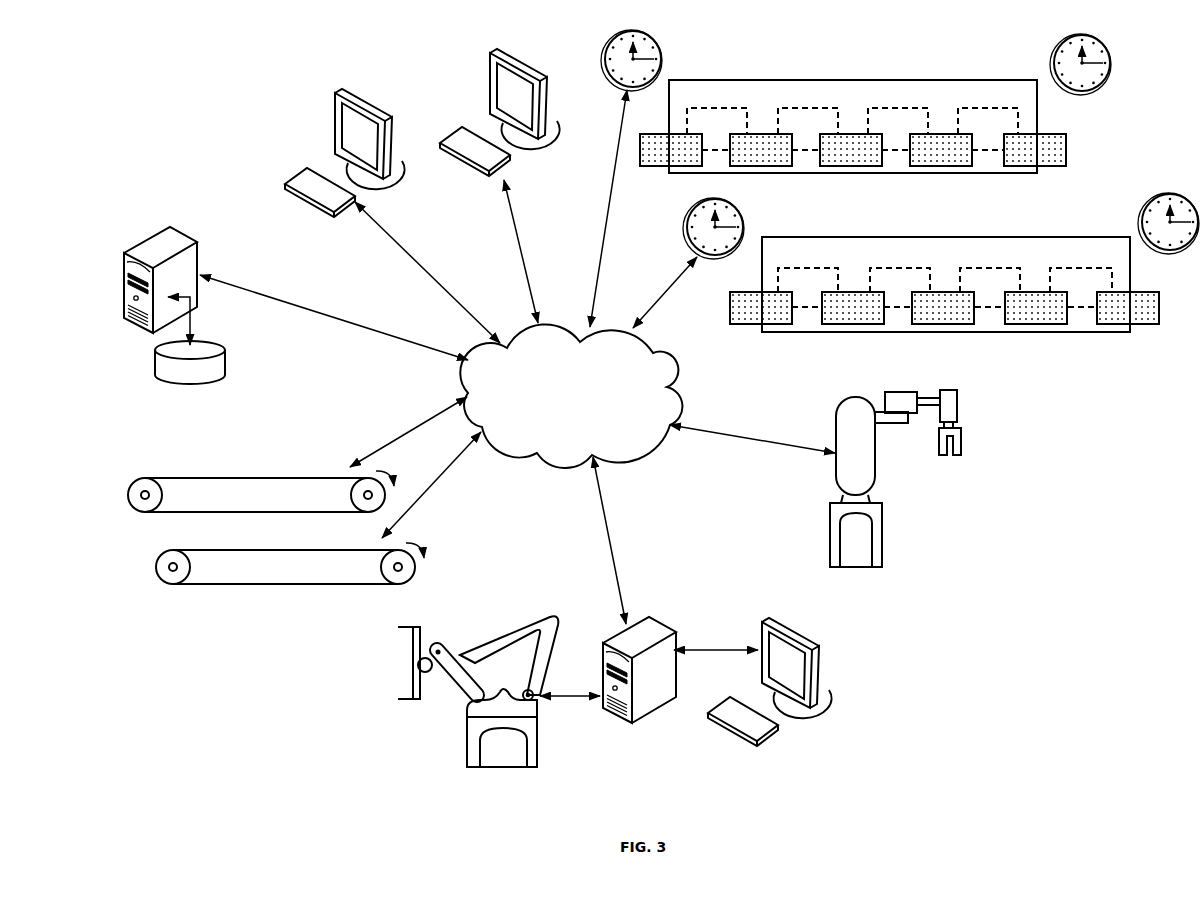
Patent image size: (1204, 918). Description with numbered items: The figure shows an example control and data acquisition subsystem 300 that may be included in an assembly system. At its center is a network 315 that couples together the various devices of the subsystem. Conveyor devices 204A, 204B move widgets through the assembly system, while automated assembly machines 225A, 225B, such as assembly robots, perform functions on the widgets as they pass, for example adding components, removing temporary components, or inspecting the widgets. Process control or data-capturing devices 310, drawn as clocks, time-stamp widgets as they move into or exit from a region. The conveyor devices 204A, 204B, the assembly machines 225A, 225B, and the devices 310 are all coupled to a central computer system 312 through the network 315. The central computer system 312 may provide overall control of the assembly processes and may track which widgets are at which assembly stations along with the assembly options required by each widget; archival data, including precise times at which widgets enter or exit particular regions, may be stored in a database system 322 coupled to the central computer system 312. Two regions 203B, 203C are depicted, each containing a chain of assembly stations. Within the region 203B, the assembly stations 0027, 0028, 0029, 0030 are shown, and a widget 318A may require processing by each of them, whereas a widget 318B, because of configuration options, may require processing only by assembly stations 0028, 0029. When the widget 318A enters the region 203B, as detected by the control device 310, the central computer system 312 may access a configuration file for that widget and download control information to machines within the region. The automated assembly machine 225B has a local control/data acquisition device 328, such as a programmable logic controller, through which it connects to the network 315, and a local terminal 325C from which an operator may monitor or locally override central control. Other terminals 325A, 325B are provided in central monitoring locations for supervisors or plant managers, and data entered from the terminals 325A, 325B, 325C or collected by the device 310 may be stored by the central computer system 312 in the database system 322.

The control and data acquisition subsystem 300 is at (1017, 695).
The process control/data acquisition device 310 is at (661, 47).
The central computer system 312 is at (156, 240).
The network 315 is at (583, 406).
The database system 322 is at (190, 385).
The terminal 325A is at (340, 92).
The terminal 325B is at (496, 51).
The local terminal 325C is at (820, 658).
The local control/data acquisition device 328 is at (632, 715).
The region 203B is at (873, 129).
The region 203C is at (1130, 283).
The widget 318A is at (641, 167).
The widget 318B is at (762, 166).
The assembly station 0027 is at (716, 108).
The assembly station 0028 is at (806, 108).
The assembly station 0029 is at (896, 108).
The assembly station 0030 is at (988, 108).
The conveyor device 204A is at (145, 512).
The conveyor device 204B is at (175, 584).
The automated assembly machine 225A is at (882, 527).
The automated assembly machine 225B is at (462, 717).